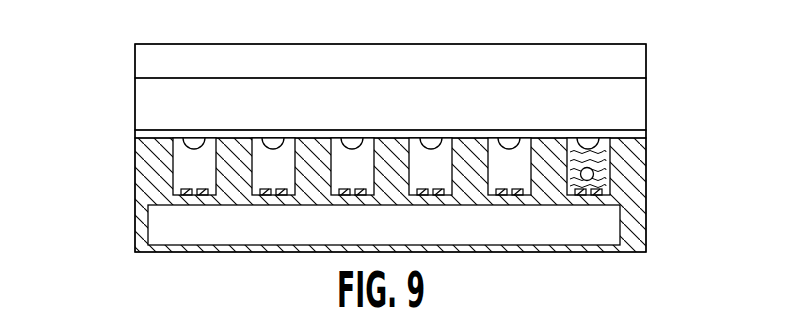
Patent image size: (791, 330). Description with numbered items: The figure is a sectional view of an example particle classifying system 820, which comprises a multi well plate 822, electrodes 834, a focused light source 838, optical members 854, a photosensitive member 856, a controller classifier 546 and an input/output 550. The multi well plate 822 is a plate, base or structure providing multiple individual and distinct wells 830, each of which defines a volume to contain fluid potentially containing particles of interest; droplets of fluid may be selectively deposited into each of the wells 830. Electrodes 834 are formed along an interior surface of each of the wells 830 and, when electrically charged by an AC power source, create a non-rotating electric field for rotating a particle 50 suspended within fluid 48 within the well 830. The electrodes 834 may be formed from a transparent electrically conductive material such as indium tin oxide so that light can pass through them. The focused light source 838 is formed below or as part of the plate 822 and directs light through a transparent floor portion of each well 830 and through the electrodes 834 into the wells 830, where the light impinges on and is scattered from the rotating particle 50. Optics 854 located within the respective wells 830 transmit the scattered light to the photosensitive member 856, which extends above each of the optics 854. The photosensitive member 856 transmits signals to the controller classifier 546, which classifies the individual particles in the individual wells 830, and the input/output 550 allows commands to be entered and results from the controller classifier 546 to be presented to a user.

The particle classifying system 820 is at (81, 102).
The input/output 550 is at (648, 62).
The controller classifier 546 is at (648, 108).
The photosensitive member 856 is at (648, 134).
The multi well plate 822 is at (138, 187).
The focused light source 838 is at (142, 232).
The optical members 854 is at (204, 150).
The electrodes 834 is at (202, 189).
The wells 830 is at (605, 176).
The fluid 48 is at (592, 157).
The particle 50 is at (600, 195).